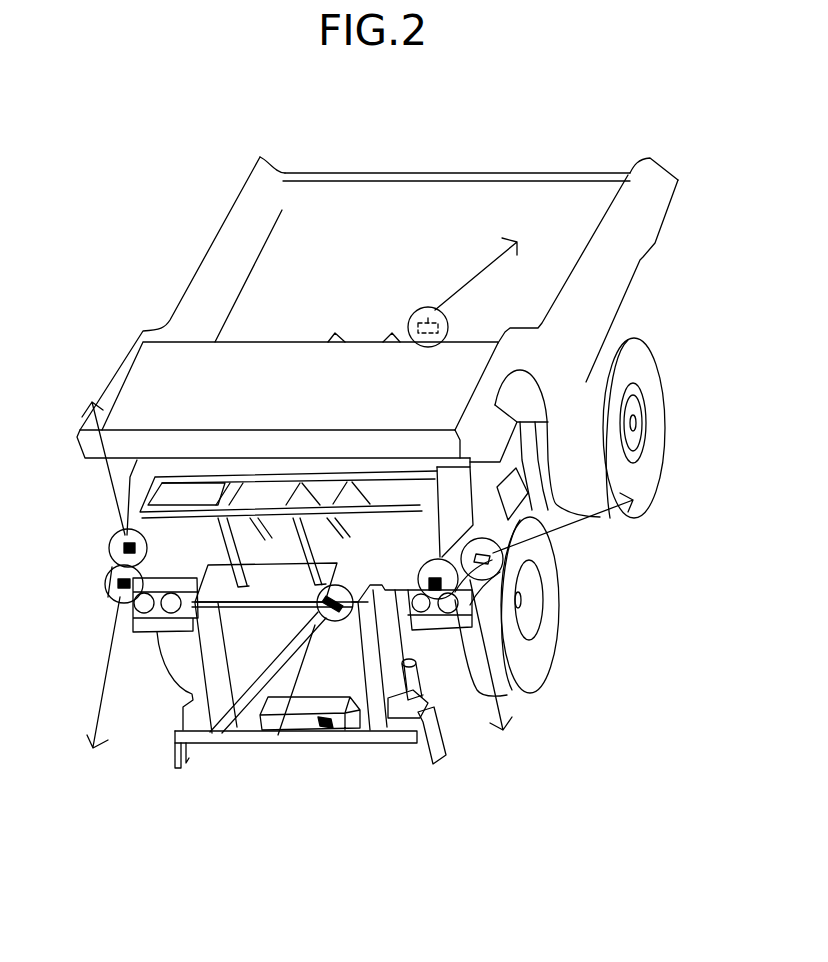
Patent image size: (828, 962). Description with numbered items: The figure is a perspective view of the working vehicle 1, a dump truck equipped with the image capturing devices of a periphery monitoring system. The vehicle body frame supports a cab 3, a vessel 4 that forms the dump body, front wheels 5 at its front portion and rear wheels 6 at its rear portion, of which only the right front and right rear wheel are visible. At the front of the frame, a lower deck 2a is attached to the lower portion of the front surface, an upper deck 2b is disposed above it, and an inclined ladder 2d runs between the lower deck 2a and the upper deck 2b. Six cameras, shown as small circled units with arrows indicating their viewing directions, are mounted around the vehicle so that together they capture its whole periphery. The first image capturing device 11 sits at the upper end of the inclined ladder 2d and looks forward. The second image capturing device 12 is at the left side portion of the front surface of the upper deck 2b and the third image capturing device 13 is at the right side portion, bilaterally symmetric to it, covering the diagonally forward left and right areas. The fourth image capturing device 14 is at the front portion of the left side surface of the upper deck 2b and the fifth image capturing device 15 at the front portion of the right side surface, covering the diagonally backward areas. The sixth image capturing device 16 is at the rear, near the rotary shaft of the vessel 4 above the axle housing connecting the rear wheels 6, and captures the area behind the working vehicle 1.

The working vehicle 1 is at (158, 212).
The lower deck 2a is at (230, 738).
The upper deck 2b is at (182, 548).
The inclined ladder 2d is at (260, 714).
The cab 3 is at (452, 488).
The vessel 4 is at (380, 210).
The front wheels 5 is at (547, 635).
The rear wheels 6 is at (643, 360).
The first image capturing device 11 is at (336, 622).
The second image capturing device 12 is at (440, 600).
The third image capturing device 13 is at (107, 594).
The fourth image capturing device 14 is at (502, 560).
The fifth image capturing device 15 is at (110, 546).
The sixth image capturing device 16 is at (436, 310).